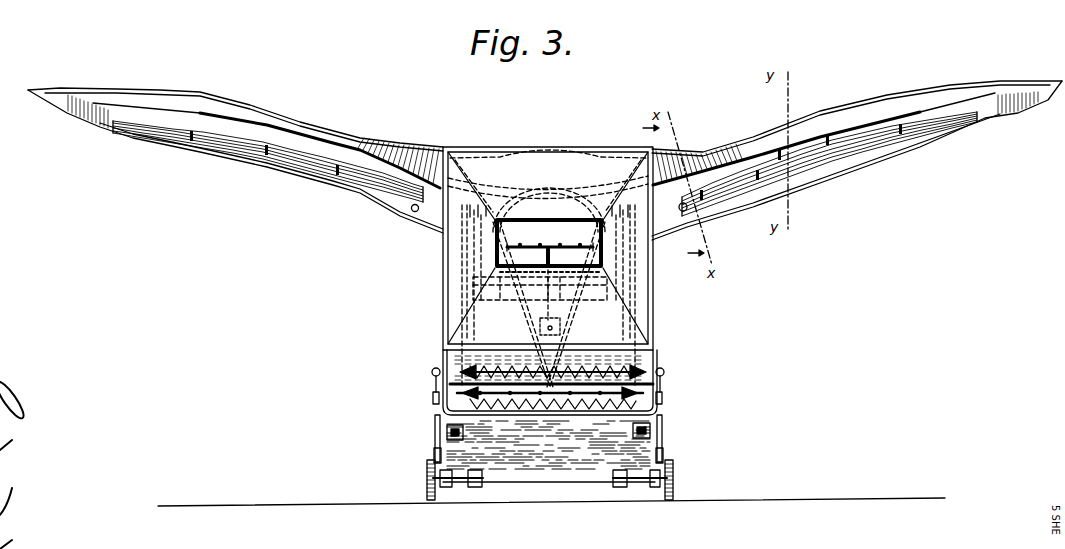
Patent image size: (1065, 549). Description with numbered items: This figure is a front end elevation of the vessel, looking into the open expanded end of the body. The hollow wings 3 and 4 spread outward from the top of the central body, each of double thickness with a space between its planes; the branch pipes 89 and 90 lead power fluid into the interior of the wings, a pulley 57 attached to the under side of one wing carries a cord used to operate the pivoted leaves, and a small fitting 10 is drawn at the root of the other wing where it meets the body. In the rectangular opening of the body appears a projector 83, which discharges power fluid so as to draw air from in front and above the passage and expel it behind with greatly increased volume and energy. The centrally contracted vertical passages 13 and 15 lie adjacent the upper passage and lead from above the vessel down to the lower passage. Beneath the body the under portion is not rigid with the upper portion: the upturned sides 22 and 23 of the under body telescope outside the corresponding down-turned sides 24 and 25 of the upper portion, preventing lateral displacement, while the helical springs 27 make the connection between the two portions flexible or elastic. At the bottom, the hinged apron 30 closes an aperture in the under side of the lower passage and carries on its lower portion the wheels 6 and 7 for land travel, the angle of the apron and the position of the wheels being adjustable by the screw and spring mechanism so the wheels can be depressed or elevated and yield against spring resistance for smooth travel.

The hollow wing 3 is at (186, 98).
The hollow wing 4 is at (887, 97).
The branch pipe 89 is at (283, 130).
The branch pipe 90 is at (738, 150).
The left wing pivot 10 is at (408, 209).
The pulley 57 is at (684, 213).
The wheel 7 is at (550, 248).
The projector 83 is at (522, 250).
The vertical passage 13 is at (631, 298).
The vertical passage 15 is at (462, 314).
The down-turned side 24 is at (441, 360).
The helical spring 27 is at (626, 364).
The upturned side 22 is at (445, 388).
The down-turned side 25 is at (655, 372).
The upturned side 23 is at (658, 388).
The apron 30 is at (550, 451).
The wheel 6 is at (428, 466).